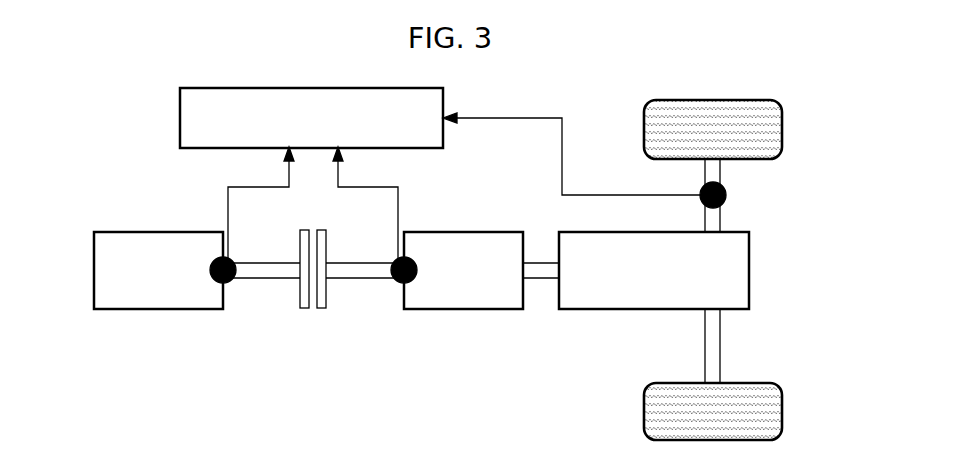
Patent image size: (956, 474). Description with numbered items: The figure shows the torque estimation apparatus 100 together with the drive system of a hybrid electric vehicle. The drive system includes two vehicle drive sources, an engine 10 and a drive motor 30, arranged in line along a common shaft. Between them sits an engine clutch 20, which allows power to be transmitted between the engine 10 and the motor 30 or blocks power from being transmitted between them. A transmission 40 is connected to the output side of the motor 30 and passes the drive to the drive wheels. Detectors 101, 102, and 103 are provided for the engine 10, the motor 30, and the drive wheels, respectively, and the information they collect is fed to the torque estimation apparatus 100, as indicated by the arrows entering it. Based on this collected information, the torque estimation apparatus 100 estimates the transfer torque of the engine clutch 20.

The torque estimation apparatus 100 is at (180, 121).
The engine 10 is at (170, 309).
The engine clutch 20 is at (317, 310).
The drive motor 30 is at (447, 309).
The transmission 40 is at (750, 268).
The detector 101 is at (227, 282).
The detector 102 is at (398, 282).
The detector 103 is at (726, 193).